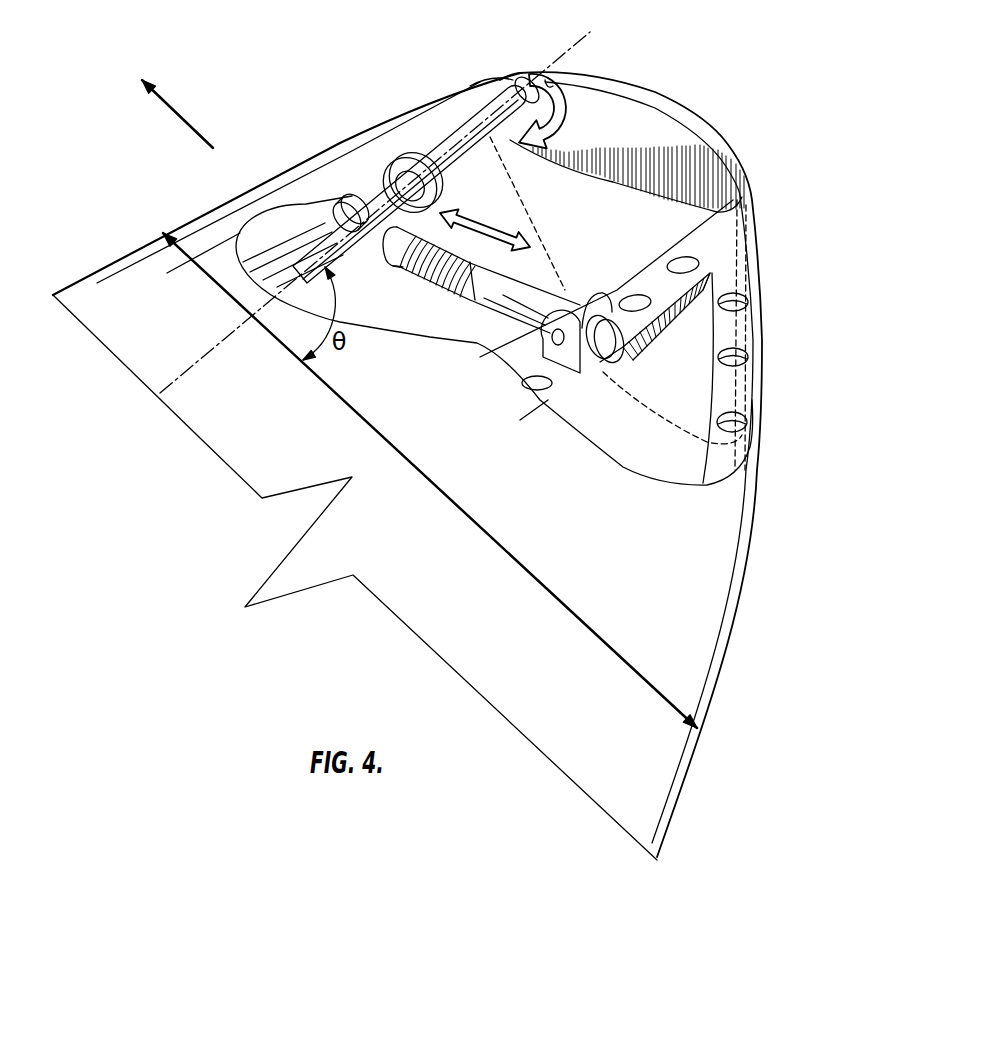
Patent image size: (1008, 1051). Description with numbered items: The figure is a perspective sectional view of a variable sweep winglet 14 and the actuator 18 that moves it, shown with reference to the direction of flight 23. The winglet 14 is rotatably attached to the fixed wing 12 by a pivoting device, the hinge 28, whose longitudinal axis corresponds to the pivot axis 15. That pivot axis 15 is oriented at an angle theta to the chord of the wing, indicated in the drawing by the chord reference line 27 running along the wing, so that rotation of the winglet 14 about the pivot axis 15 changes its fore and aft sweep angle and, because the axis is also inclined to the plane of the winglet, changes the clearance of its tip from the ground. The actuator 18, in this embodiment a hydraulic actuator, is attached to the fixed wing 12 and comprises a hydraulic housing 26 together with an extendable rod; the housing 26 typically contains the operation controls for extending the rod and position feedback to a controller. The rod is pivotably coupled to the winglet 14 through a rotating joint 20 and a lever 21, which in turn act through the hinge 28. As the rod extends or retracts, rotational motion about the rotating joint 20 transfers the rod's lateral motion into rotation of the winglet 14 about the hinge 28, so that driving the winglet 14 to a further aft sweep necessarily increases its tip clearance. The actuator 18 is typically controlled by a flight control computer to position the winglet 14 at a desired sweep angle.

The fixed wing 12 is at (655, 641).
The winglet 14 is at (675, 113).
The pivot axis 15 is at (590, 30).
The actuator 18 is at (489, 321).
The rotating joint 20 is at (352, 205).
The lever 21 is at (373, 182).
The direction of flight 23 is at (187, 110).
The hydraulic housing 26 is at (537, 300).
The chord line 27 is at (452, 497).
The hinge 28 is at (490, 110).